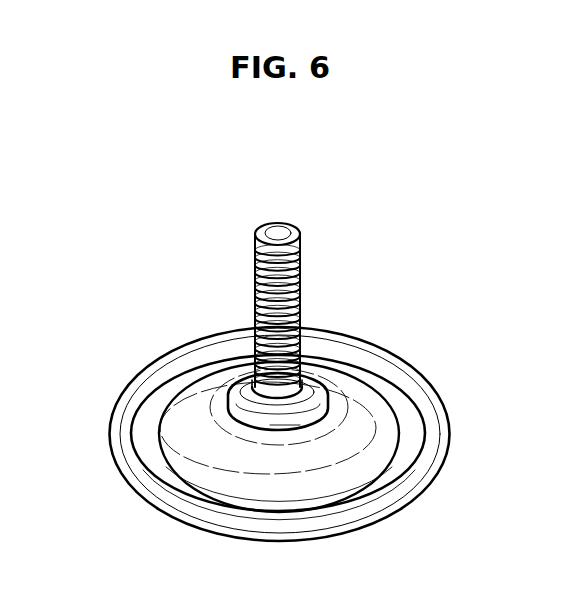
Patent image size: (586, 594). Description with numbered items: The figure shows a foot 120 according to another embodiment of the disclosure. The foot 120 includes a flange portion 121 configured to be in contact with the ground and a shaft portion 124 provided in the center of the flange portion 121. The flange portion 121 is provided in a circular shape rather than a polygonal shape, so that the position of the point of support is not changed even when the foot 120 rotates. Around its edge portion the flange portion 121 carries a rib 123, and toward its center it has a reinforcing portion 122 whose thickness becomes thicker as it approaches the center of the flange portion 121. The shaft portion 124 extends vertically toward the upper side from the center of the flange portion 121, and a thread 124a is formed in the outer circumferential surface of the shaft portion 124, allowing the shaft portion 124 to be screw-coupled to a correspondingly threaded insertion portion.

The foot 120 is at (108, 301).
The flange portion 121 is at (536, 490).
The reinforcing portion 122 is at (338, 451).
The rib 123 is at (418, 470).
The shaft portion 124 is at (260, 232).
The thread 124a is at (302, 252).